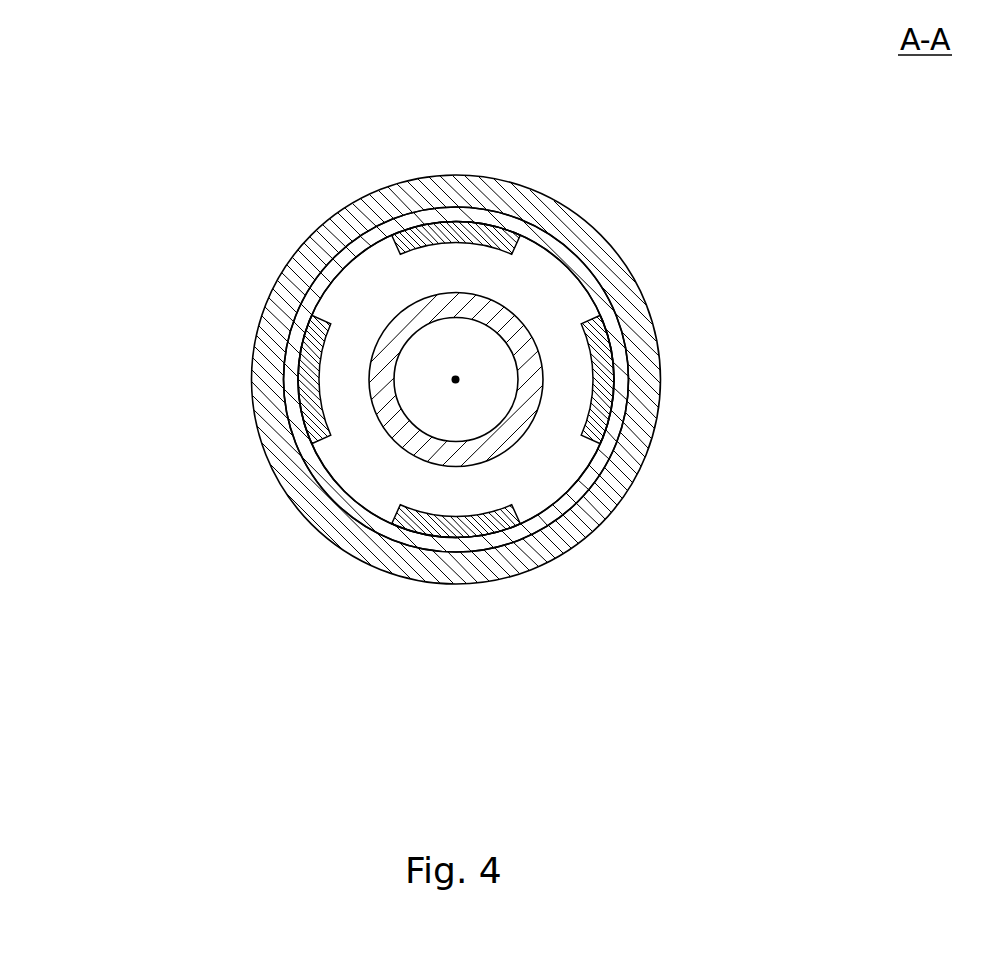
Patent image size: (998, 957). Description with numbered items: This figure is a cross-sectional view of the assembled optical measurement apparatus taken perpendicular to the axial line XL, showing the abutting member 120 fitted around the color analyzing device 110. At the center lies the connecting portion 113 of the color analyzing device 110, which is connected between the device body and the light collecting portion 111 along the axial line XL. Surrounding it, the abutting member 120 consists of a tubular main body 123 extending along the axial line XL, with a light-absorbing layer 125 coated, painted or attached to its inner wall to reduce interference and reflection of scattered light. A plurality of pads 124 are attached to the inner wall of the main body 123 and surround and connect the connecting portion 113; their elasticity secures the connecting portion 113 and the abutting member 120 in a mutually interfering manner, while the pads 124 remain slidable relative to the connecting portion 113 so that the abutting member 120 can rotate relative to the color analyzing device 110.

The color analyzing device 110 is at (366, 380).
The light collecting portion 111 is at (386, 367).
The connecting portion 113 is at (345, 343).
The abutting member 120 is at (532, 379).
The main body 123 is at (640, 407).
The pads 124 is at (600, 330).
The light-absorbing layer 125 is at (619, 366).
The axial line XL is at (453, 380).